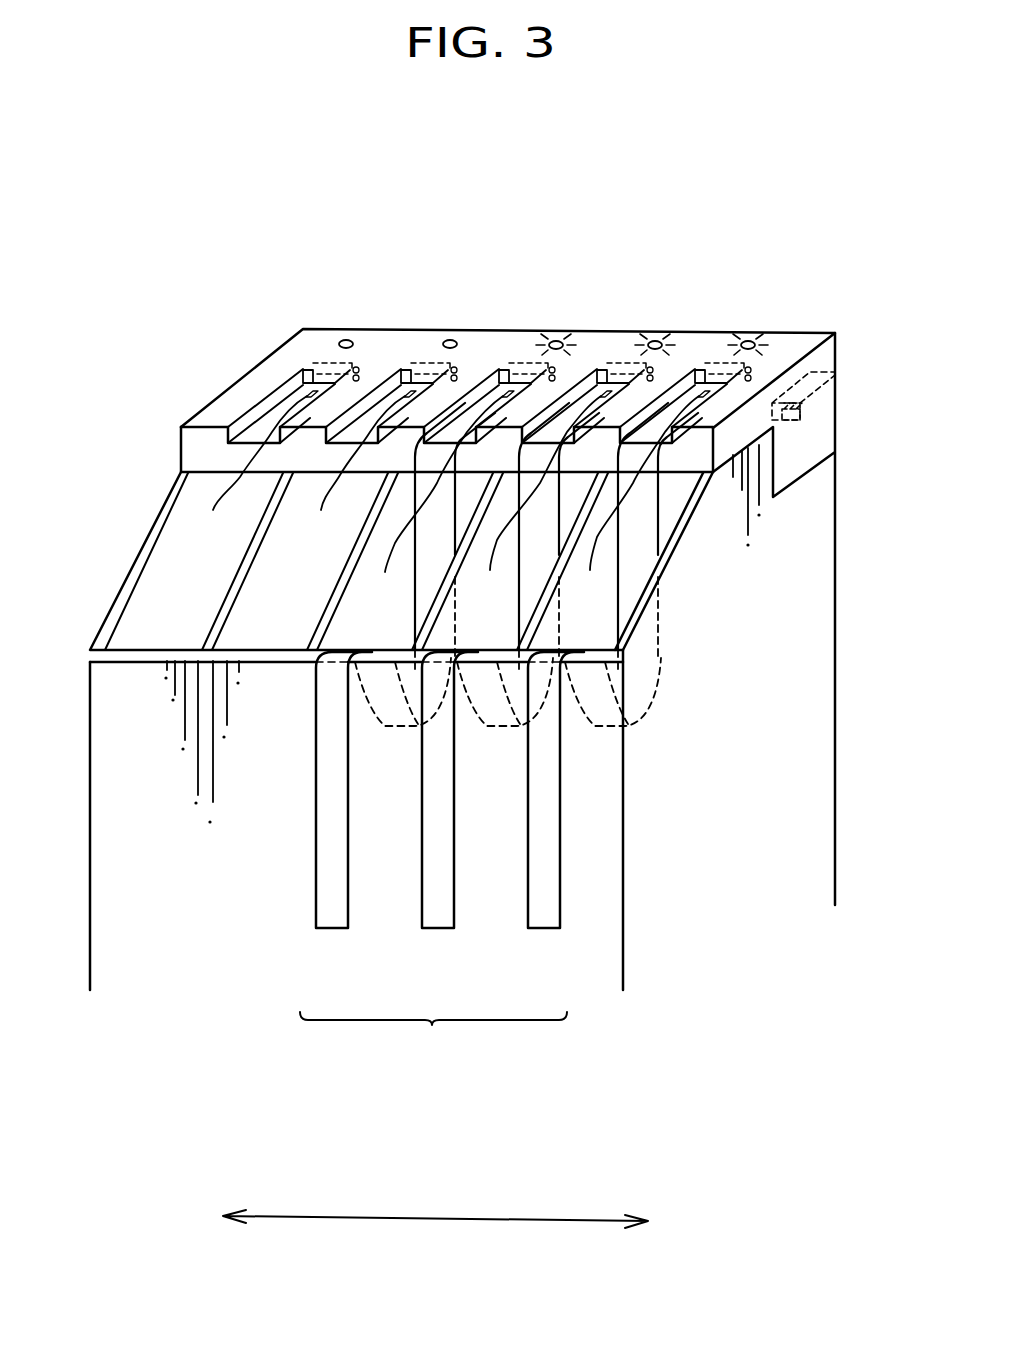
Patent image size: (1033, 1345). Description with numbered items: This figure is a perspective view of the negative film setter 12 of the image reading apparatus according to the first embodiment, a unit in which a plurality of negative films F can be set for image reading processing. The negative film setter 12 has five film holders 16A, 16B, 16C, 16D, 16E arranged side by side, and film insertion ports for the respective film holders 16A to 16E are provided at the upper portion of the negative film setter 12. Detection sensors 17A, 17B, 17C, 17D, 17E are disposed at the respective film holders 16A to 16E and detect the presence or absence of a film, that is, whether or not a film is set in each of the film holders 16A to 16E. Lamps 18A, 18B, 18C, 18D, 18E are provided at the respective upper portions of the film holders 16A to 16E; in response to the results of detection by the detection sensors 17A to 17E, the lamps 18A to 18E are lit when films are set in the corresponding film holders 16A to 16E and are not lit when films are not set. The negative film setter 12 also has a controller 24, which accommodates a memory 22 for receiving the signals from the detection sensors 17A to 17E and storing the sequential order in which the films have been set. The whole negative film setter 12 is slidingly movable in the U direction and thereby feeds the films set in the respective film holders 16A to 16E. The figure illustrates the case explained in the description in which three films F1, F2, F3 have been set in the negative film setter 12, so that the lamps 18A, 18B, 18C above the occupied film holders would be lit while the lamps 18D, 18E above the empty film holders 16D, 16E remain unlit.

The negative film setter 12 is at (159, 226).
The film holder 16A is at (798, 317).
The film holder 16B is at (698, 314).
The film holder 16C is at (588, 314).
The film holder 16D is at (422, 310).
The film holder 16E is at (325, 312).
The detection sensor 17A is at (636, 500).
The detection sensor 17B is at (537, 500).
The detection sensor 17C is at (432, 500).
The detection sensor 17D is at (349, 469).
The detection sensor 17E is at (247, 469).
The lamp 18A is at (750, 333).
The lamp 18B is at (659, 333).
The lamp 18C is at (558, 333).
The lamp 18D is at (448, 332).
The lamp 18E is at (348, 332).
The memory 22 is at (822, 418).
The controller 24 is at (838, 370).
The film F1 is at (544, 928).
The film F2 is at (438, 928).
The film F3 is at (332, 928).
The film F is at (433, 1037).
The U direction U is at (442, 1220).